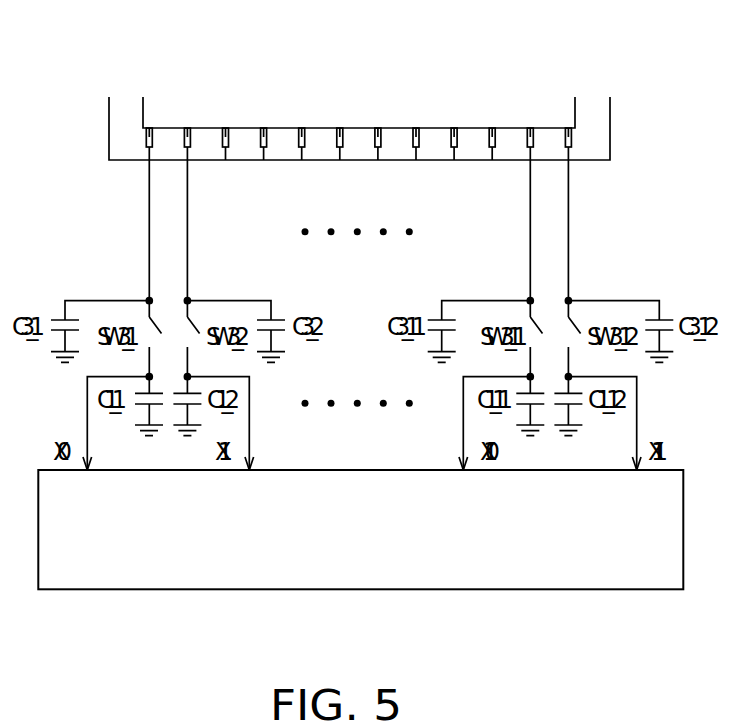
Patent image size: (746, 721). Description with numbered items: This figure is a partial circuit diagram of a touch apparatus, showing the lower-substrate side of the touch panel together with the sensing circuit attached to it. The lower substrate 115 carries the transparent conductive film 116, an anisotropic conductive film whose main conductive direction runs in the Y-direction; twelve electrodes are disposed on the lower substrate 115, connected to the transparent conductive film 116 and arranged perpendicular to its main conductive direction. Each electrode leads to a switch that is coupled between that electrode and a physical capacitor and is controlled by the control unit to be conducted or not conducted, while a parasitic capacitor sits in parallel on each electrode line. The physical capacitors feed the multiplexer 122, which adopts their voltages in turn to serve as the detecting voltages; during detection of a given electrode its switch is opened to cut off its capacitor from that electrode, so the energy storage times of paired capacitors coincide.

The lower substrate 115 is at (127, 138).
The transparent conductive film 116 is at (152, 111).
The multiplexer 122 is at (320, 469).